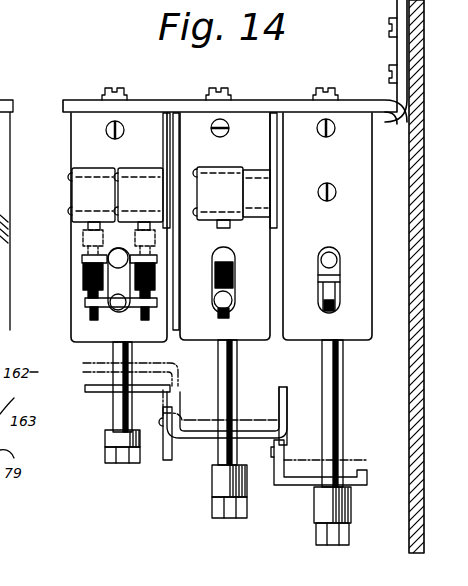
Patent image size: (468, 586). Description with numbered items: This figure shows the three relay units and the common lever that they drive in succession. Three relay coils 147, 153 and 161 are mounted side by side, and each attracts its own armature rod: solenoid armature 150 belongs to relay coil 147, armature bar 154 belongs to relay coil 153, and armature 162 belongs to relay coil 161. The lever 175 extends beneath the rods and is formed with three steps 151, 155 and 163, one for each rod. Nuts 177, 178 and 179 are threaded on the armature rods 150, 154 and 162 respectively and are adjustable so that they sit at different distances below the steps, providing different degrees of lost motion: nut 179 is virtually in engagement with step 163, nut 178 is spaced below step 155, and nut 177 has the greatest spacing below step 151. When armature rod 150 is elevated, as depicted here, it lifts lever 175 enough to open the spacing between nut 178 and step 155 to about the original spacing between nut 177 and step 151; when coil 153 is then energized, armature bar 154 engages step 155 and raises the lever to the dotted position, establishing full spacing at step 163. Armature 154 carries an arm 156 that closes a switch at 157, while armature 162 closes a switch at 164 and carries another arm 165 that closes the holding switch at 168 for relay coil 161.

The relay coil 147 is at (350, 125).
The solenoid armature 150 is at (334, 386).
The step 151 is at (352, 484).
The relay coil 153 is at (247, 120).
The armature 154 is at (228, 378).
The step 155 is at (203, 440).
The arm 156 is at (228, 300).
The switch 157 is at (222, 183).
The relay coil 161 is at (140, 127).
The armature 162 is at (113, 353).
The step 163 is at (95, 390).
The switch 164 is at (140, 180).
The arm 165 is at (85, 302).
The switch 168 is at (88, 185).
The lever 175 is at (163, 452).
The nut 177 is at (320, 508).
The nut 178 is at (214, 486).
The nut 179 is at (110, 442).